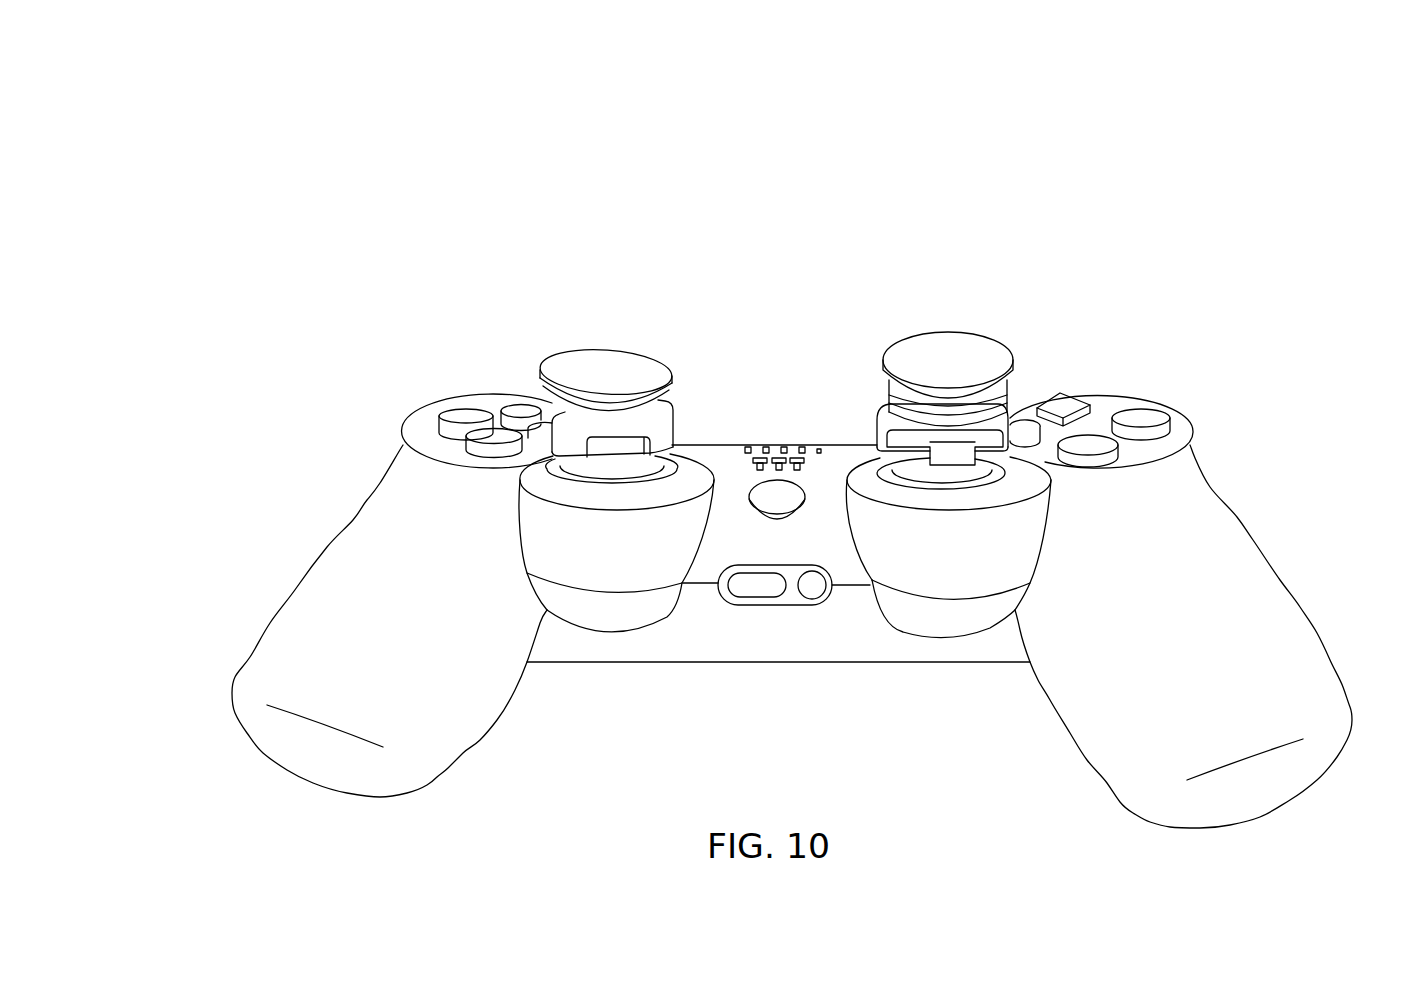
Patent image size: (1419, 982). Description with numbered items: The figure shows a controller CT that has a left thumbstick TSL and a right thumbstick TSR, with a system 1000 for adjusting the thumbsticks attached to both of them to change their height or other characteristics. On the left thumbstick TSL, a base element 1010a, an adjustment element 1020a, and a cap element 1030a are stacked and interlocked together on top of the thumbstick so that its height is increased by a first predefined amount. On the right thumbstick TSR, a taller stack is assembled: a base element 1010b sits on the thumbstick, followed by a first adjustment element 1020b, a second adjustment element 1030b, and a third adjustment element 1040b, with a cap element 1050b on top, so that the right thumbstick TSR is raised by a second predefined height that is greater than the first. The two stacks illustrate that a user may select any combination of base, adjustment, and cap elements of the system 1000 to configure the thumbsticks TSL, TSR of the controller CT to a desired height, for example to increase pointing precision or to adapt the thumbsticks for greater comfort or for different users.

The system for adjusting the thumbsticks 1000 is at (292, 130).
The base element 1010a is at (667, 430).
The base element 1010b is at (877, 440).
The adjustment element 1020a is at (515, 407).
The first adjustment element 1020b is at (1075, 395).
The cap element 1030a is at (601, 384).
The second adjustment element 1030b is at (878, 398).
The third adjustment element 1040b is at (1022, 387).
The cap element 1050b is at (923, 362).
The left thumbstick TSL is at (460, 455).
The right thumbstick TSR is at (1078, 439).
The controller CT is at (788, 543).